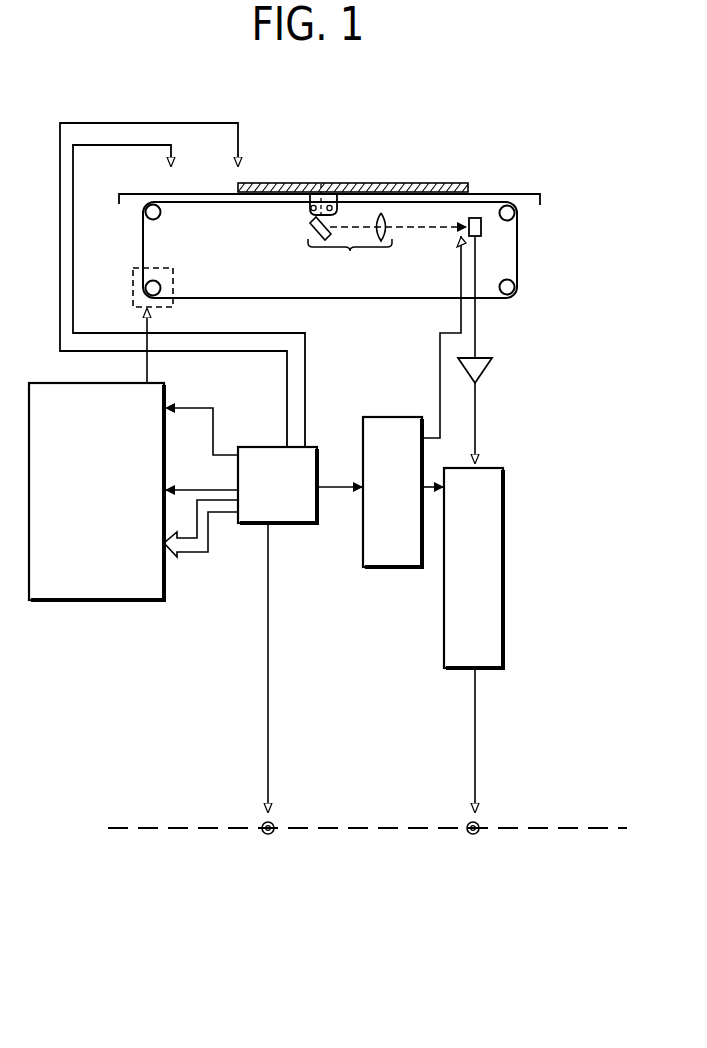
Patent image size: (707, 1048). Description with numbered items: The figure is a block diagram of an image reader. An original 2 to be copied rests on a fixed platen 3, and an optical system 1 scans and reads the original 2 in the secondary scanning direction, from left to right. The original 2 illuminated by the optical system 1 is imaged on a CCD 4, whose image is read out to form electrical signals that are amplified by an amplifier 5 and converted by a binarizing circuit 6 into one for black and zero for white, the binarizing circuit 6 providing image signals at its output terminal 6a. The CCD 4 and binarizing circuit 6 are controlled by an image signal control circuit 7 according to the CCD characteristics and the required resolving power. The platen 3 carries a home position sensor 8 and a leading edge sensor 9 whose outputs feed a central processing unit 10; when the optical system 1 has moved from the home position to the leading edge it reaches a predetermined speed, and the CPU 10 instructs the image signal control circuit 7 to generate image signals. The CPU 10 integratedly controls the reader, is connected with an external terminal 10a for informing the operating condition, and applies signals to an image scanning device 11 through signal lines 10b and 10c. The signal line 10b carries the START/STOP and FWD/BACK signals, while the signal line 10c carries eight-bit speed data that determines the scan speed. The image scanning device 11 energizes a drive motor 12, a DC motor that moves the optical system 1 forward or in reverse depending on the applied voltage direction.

The optical system 1 is at (350, 276).
The original 2 is at (344, 182).
The fixed platen 3 is at (538, 191).
The CCD 4 is at (474, 217).
The amplifier 5 is at (488, 369).
The binarizing circuit 6 is at (504, 566).
The output terminal 6a is at (476, 835).
The image signal control circuit 7 is at (392, 570).
The home position sensor 8 is at (167, 165).
The leading edge sensor 9 is at (243, 165).
The central processing unit (CPU) 10 is at (293, 525).
The external terminal 10a is at (271, 835).
The signal line 10b is at (232, 488).
The signal line 10c is at (200, 553).
The image scanning device 11 is at (106, 603).
The drive motor 12 is at (175, 273).